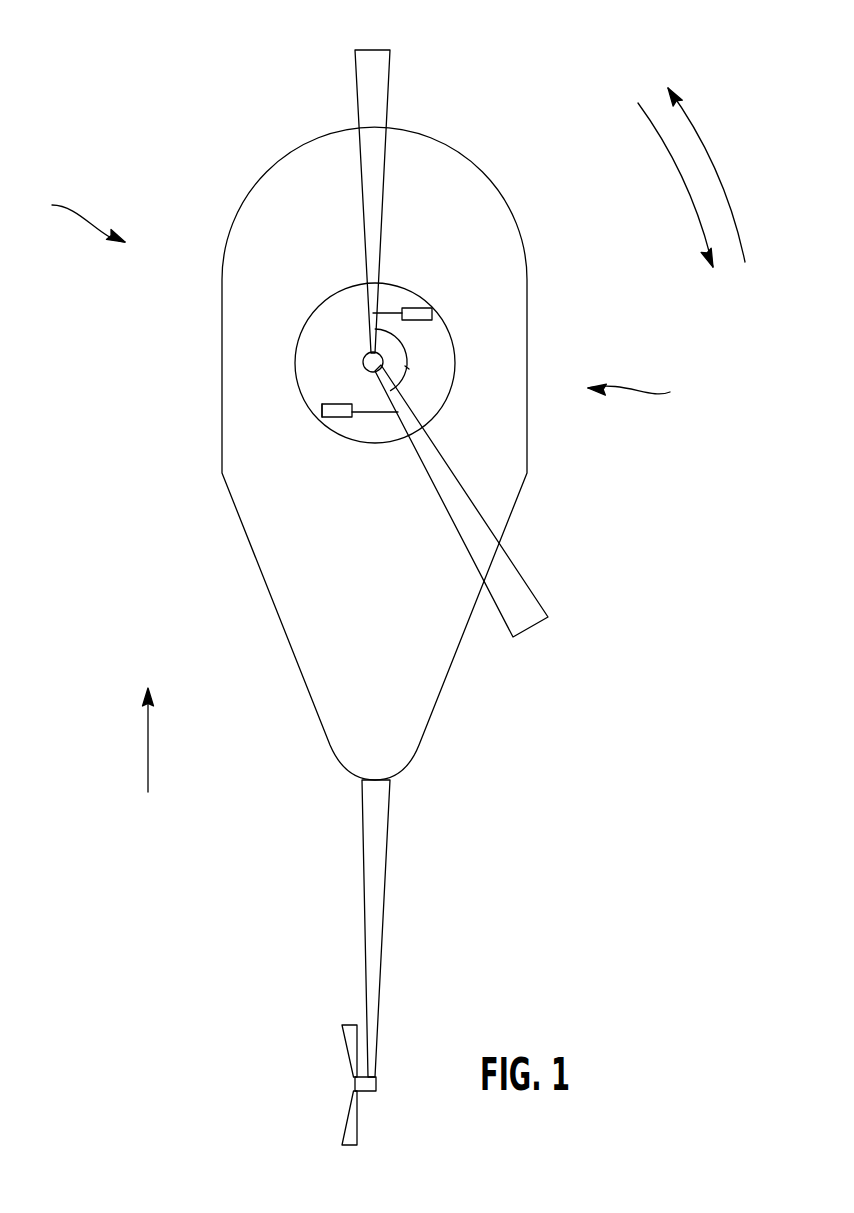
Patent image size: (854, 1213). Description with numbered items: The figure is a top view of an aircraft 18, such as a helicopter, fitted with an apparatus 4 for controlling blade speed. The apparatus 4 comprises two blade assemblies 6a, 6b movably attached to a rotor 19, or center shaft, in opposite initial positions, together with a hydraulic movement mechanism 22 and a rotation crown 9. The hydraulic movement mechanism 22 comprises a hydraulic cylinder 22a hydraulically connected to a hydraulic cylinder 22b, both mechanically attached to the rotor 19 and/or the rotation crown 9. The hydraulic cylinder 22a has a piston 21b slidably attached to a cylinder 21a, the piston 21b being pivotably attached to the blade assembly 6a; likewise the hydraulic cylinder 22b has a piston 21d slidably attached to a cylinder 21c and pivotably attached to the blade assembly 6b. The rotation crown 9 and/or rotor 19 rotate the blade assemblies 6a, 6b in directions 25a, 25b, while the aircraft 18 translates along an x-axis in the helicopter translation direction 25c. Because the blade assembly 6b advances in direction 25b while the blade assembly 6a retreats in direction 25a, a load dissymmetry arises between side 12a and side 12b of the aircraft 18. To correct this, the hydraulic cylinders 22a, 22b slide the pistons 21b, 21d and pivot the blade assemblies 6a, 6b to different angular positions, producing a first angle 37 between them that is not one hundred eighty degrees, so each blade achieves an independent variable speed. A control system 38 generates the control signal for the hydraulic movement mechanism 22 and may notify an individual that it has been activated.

The apparatus 4 is at (363, 429).
The blade assembly 6a is at (391, 74).
The blade assembly 6b is at (529, 590).
The rotation crown 9 is at (390, 415).
The side 12a is at (646, 394).
The side 12b is at (68, 215).
The aircraft 18 is at (469, 152).
The rotor 19 is at (363, 358).
The cylinder 21a is at (407, 367).
The piston 21b is at (392, 312).
The cylinder 21c is at (322, 413).
The piston 21d is at (372, 412).
The hydraulic movement mechanism 22 is at (378, 354).
The hydraulic cylinder 22a is at (420, 314).
The hydraulic cylinder 22b is at (338, 412).
The direction 25a is at (697, 134).
The direction 25b is at (668, 155).
The helicopter translation direction 25c is at (148, 742).
The first angle 37 is at (410, 370).
The control system 38 is at (356, 441).